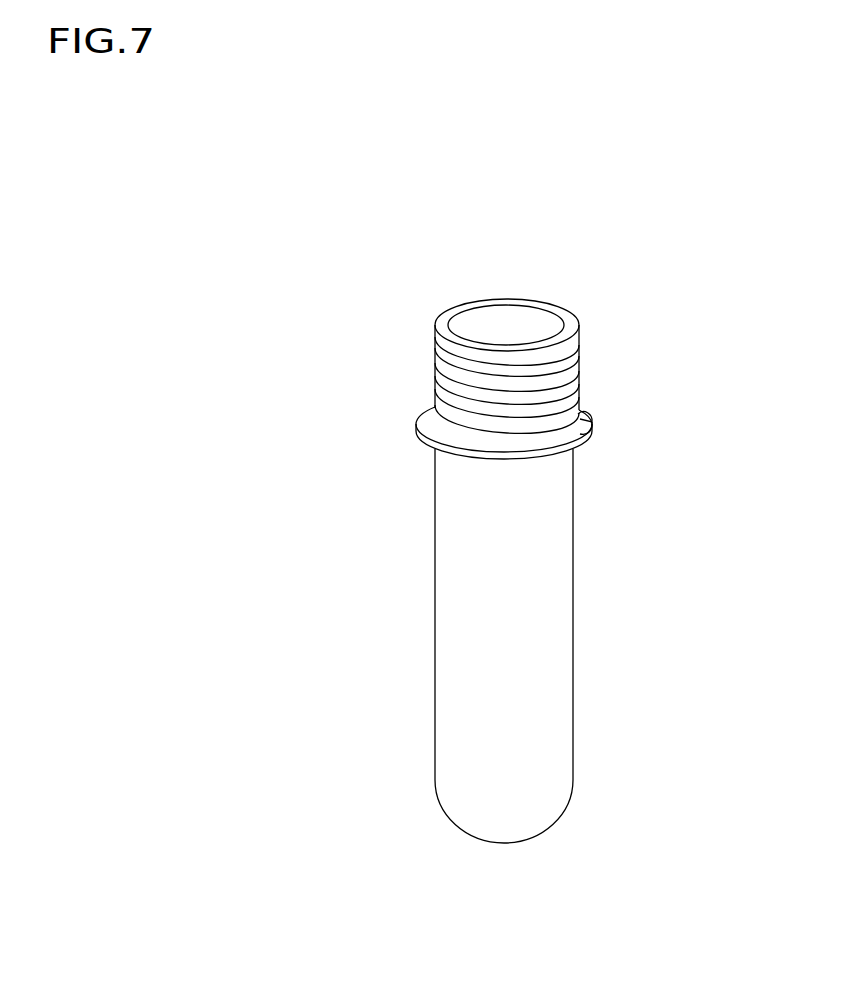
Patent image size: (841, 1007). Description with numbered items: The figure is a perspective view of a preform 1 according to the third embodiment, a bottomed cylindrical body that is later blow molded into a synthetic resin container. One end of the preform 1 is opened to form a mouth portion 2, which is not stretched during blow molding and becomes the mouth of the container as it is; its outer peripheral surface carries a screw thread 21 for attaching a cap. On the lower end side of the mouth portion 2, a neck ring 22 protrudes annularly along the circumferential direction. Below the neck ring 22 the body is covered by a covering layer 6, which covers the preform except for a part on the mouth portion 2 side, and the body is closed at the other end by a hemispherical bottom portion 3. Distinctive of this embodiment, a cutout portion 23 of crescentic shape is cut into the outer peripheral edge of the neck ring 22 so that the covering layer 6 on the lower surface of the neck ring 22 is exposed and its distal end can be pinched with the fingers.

The preform 1 is at (639, 241).
The mouth portion 2 is at (433, 398).
The screw thread 21 is at (440, 353).
The neck ring 22 is at (417, 417).
The cutout portion 23 is at (592, 423).
The covering layer 6 is at (590, 428).
The bottom portion 3 is at (505, 822).